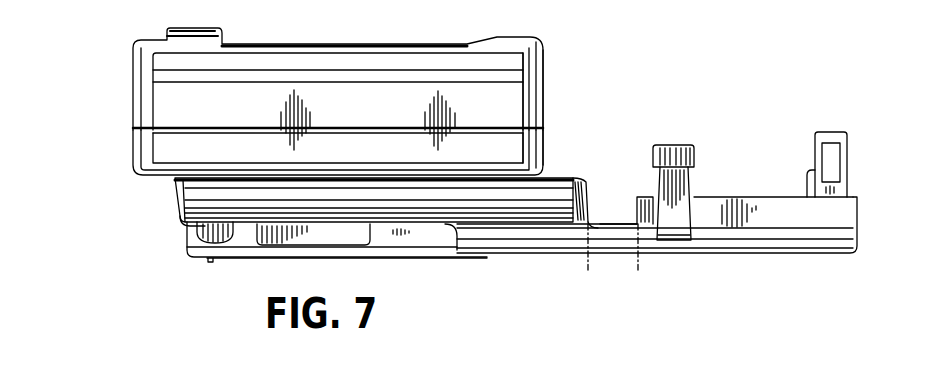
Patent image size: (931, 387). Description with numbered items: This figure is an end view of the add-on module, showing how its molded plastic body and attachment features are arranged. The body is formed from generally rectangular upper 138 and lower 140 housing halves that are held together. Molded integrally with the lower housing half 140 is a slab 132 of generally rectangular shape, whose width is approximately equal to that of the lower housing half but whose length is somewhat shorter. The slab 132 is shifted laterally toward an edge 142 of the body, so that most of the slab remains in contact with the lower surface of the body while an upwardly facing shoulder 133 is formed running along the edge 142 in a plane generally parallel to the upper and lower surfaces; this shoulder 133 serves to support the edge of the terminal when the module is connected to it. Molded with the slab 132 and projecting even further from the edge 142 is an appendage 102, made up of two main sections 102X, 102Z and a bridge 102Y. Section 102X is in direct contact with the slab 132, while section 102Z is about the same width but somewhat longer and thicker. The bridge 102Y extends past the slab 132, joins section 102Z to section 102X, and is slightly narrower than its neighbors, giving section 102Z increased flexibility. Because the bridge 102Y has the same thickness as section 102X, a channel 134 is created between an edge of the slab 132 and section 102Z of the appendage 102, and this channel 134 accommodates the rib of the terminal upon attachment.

The appendage 102 is at (678, 258).
The section 102X is at (540, 248).
The bridge 102Y is at (612, 248).
The section 102Z is at (733, 237).
The slab 132 is at (182, 202).
The shoulder 133 is at (567, 171).
The channel 134 is at (615, 220).
The upper housing half 138 is at (167, 107).
The lower housing half 140 is at (163, 152).
The edge 142 is at (549, 152).